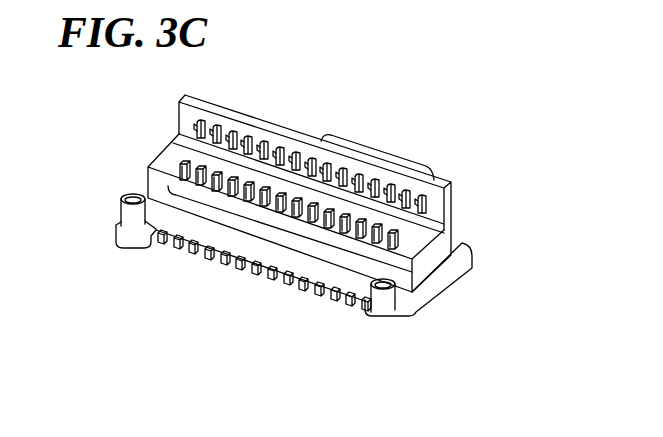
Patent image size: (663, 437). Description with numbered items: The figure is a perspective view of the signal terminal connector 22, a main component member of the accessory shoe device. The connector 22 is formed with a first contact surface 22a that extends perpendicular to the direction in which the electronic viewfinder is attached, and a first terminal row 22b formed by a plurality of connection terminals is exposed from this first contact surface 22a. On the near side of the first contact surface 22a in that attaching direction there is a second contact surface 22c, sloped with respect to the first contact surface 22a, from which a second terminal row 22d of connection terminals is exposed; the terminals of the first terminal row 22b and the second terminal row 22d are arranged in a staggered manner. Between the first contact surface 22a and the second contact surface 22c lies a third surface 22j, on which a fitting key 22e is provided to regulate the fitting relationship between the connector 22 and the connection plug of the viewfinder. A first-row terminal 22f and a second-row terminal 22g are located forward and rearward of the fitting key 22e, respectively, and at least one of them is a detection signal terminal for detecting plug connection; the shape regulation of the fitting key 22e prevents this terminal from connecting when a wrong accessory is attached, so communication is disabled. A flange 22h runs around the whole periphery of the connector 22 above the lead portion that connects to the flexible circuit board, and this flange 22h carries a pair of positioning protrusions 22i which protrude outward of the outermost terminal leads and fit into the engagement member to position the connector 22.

The signal terminal connector 22 is at (457, 174).
The first contact surface 22a is at (433, 200).
The first terminal row 22b is at (323, 132).
The second contact surface 22c is at (410, 248).
The second terminal row 22d is at (263, 243).
The fitting key 22e is at (193, 138).
The first-row terminal 22f is at (213, 108).
The second-row terminal 22g is at (180, 170).
The flange 22h is at (433, 283).
The positioning protrusions 22i is at (130, 223).
The third surface 22j is at (423, 222).